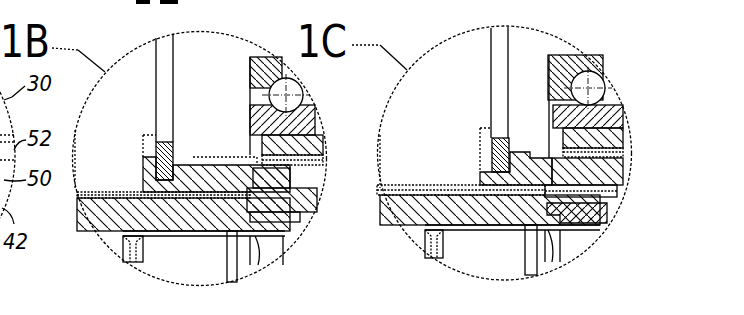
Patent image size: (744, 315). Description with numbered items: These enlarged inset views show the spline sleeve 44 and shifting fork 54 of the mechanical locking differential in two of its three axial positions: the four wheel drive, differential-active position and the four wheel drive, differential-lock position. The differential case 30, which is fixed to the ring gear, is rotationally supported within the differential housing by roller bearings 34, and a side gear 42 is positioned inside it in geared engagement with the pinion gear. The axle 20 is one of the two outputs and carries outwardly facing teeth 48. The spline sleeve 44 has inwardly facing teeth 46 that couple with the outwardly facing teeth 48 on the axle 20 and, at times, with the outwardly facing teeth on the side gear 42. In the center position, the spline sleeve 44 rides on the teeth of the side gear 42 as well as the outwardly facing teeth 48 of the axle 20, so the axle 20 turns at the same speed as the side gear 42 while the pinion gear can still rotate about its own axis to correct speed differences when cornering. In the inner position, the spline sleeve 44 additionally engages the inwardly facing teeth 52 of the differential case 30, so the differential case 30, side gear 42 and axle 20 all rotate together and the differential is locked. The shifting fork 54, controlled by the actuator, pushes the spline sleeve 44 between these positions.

In FIG. 1B, the axle 20 is at (97, 215).
In FIG. 1C, the axle 20 is at (402, 210).
In FIG. 1B, the differential case 30 is at (310, 142).
In FIG. 1C, the differential case 30 is at (607, 138).
In FIG. 1B, the roller bearings 34 is at (251, 62).
In FIG. 1C, the roller bearings 34 is at (560, 62).
In FIG. 1B, the side gear 42 is at (300, 216).
In FIG. 1C, the side gear 42 is at (607, 215).
In FIG. 1B, the spline sleeve 44 is at (180, 172).
In FIG. 1C, the spline sleeve 44 is at (515, 152).
In FIG. 1C, the inwardly facing teeth 46 is at (620, 194).
In FIG. 1B, the outwardly facing teeth 48 is at (138, 192).
In FIG. 1C, the outwardly facing teeth 48 is at (453, 187).
In FIG. 1B, the inwardly facing teeth 52 is at (310, 160).
In FIG. 1C, the inwardly facing teeth 52 is at (620, 150).
In FIG. 1B, the shifting fork 54 is at (168, 108).
In FIG. 1C, the shifting fork 54 is at (503, 138).